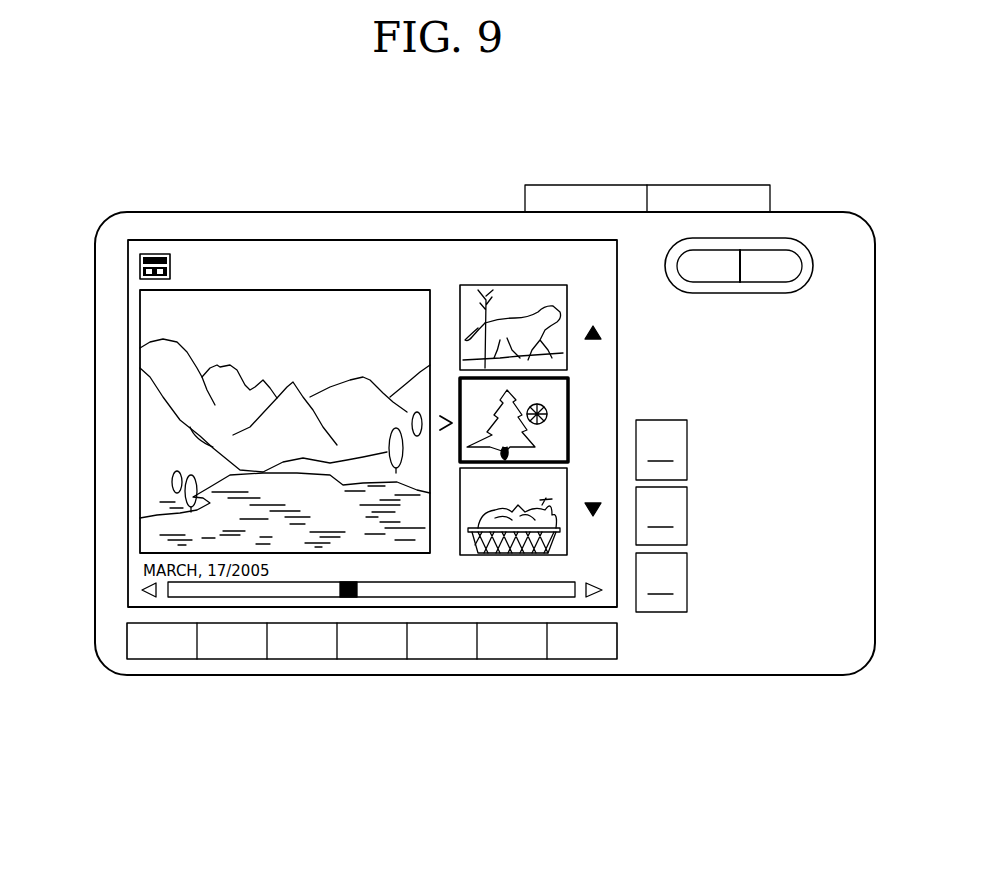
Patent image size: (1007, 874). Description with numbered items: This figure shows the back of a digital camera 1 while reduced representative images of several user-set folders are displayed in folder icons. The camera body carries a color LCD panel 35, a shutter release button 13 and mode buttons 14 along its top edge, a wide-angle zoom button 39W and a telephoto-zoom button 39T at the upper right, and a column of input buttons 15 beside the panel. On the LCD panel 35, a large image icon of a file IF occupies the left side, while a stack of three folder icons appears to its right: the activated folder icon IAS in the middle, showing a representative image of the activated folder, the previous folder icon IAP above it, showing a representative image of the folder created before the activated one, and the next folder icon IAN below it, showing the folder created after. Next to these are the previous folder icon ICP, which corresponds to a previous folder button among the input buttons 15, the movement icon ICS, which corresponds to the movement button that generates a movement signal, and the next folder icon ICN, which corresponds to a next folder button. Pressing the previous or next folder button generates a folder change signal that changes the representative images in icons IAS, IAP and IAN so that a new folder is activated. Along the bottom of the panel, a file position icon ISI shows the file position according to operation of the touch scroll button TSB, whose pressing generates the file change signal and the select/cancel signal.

The digital camera 1 is at (163, 135).
The shutter release button 13 is at (712, 183).
The mode buttons 14 is at (585, 183).
The input buttons 15 is at (665, 626).
The color LCD panel 35 is at (394, 236).
The wide-angle zoom button 39W is at (714, 281).
The telephoto-zoom button 39T is at (770, 281).
The image icon of a file IF is at (152, 440).
The previous folder icon IAP is at (518, 291).
The activated folder icon IAS is at (573, 395).
The next folder icon IAN is at (467, 497).
The previous folder icon ICP is at (600, 332).
The movement icon ICS is at (598, 410).
The next folder icon ICN is at (595, 518).
The file position icon ISI is at (130, 590).
The touch scroll button TSB is at (127, 640).